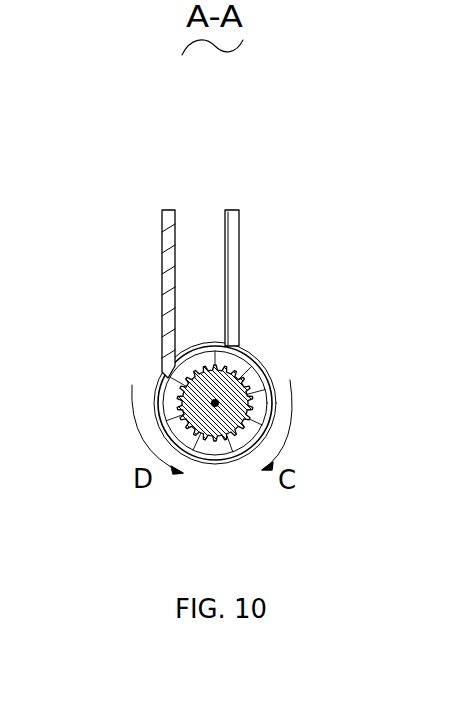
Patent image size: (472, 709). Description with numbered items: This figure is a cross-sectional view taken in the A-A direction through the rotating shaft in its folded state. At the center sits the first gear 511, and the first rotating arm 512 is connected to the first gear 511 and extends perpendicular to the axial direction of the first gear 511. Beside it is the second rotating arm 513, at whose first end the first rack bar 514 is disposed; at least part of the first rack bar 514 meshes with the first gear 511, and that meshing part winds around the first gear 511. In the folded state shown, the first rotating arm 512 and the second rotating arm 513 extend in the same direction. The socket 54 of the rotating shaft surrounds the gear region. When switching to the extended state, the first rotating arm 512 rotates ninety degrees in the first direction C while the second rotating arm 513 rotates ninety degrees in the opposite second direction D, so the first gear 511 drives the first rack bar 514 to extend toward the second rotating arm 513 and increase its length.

The socket 54 is at (262, 360).
The first gear 511 is at (248, 352).
The first rotating arm 512 is at (230, 260).
The second rotating arm 513 is at (165, 285).
The first rack bar 514 is at (163, 392).